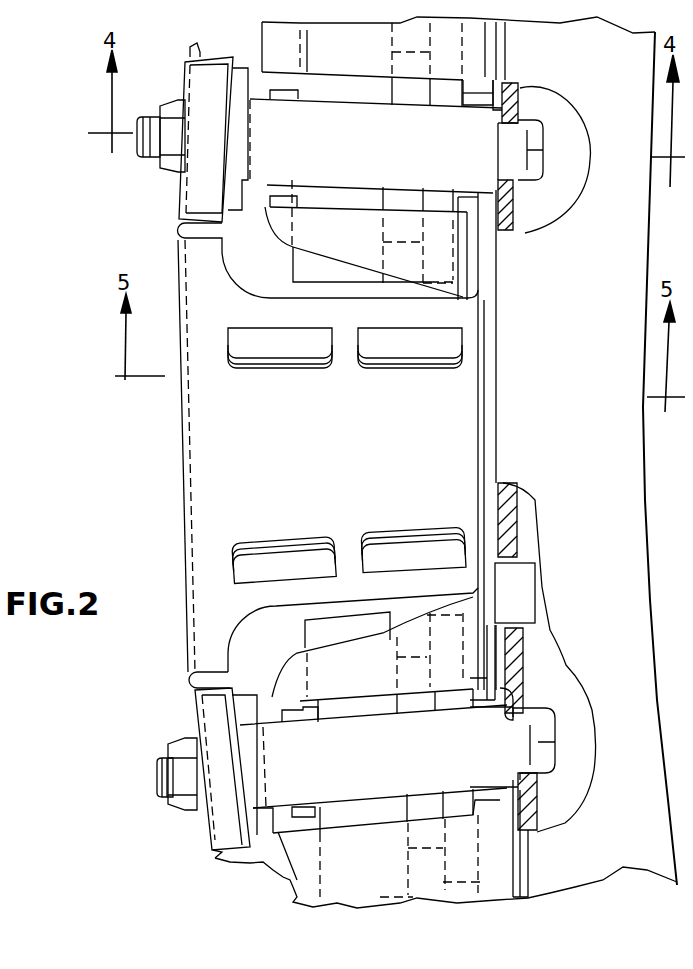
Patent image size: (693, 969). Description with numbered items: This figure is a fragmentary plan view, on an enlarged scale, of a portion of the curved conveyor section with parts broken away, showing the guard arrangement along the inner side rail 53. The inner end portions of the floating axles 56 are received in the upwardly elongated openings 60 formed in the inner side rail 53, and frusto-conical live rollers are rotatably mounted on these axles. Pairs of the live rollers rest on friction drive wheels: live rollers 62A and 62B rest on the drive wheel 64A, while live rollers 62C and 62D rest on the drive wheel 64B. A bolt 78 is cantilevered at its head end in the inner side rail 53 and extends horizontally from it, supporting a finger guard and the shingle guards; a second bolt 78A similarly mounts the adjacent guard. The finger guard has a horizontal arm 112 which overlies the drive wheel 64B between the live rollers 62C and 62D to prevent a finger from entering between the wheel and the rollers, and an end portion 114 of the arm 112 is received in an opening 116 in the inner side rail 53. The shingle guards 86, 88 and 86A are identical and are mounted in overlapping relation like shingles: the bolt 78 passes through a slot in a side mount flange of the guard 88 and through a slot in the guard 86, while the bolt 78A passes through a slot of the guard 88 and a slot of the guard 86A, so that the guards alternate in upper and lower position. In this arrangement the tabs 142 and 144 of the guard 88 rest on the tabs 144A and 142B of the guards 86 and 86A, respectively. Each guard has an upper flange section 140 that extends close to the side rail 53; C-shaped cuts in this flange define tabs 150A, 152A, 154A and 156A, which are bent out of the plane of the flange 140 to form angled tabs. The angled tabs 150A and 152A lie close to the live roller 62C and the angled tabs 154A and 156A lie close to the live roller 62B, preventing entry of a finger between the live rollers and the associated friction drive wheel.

The inner side rail 53 is at (518, 523).
The floating axles 56 is at (520, 582).
The upwardly elongated openings 60 is at (508, 623).
The live roller 62A is at (317, 870).
The live roller 62B is at (293, 652).
The live roller 62C is at (457, 272).
The live roller 62D is at (478, 43).
The drive wheel 64A is at (307, 700).
The drive wheel 64B is at (393, 84).
The bolt 78 is at (150, 158).
The bolt 78A is at (167, 762).
The shingle guard 86 is at (190, 50).
The shingle guard 86A is at (206, 856).
The shingle guard 88 is at (179, 457).
The horizontal arm 112 is at (367, 190).
The end portion 114 is at (518, 133).
The opening 116 is at (530, 152).
The upper flange section 140 is at (460, 418).
The tab portion 142 is at (210, 134).
The tab portion 142B is at (240, 758).
The tab portion 144 is at (247, 808).
The tab portion 144A is at (232, 152).
The angled tab 150A is at (410, 350).
The angled tab 152A is at (290, 347).
The angled tab 154A is at (388, 552).
The angled tab 156A is at (270, 565).